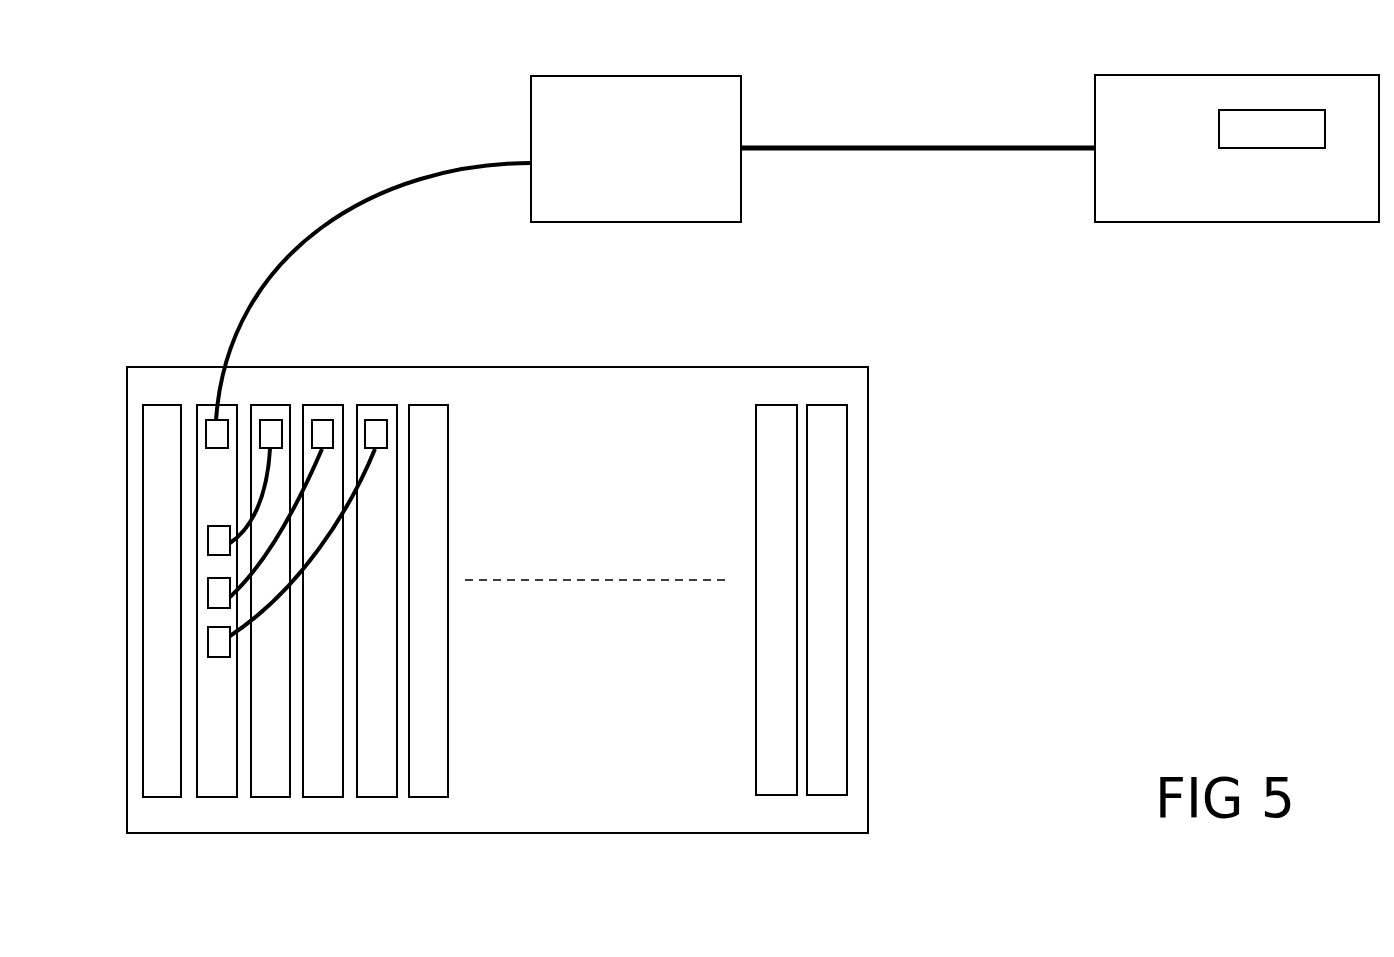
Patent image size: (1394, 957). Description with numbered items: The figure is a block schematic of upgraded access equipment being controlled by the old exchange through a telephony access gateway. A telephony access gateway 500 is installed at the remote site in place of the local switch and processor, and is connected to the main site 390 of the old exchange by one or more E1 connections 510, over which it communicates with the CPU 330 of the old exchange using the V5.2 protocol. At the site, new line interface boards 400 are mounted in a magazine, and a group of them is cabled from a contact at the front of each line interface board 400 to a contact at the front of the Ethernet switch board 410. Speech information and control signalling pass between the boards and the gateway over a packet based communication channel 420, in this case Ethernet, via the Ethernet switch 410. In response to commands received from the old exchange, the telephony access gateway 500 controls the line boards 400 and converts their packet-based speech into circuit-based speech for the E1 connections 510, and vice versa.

The telephony access gateway 500 is at (628, 222).
The E1 connections 510 is at (883, 148).
The main site 390 is at (1130, 222).
The CPU 330 is at (1291, 148).
The line interface board 400 is at (385, 762).
The Ethernet switch board 410 is at (227, 492).
The packet based communication channel 420 is at (327, 560).